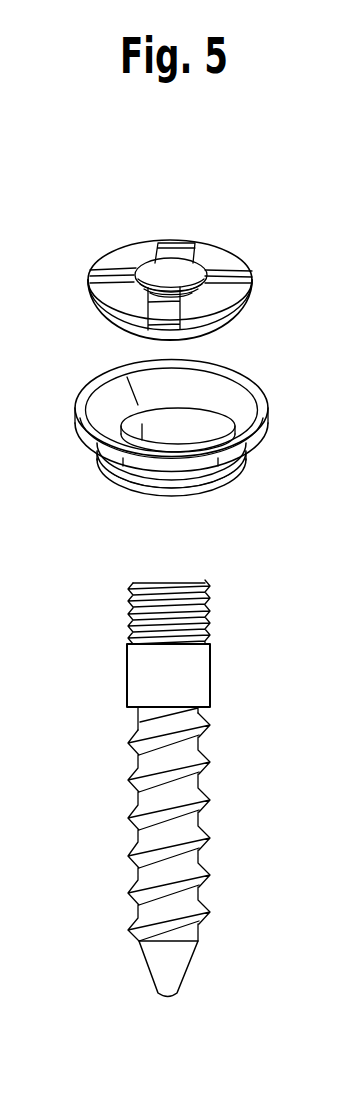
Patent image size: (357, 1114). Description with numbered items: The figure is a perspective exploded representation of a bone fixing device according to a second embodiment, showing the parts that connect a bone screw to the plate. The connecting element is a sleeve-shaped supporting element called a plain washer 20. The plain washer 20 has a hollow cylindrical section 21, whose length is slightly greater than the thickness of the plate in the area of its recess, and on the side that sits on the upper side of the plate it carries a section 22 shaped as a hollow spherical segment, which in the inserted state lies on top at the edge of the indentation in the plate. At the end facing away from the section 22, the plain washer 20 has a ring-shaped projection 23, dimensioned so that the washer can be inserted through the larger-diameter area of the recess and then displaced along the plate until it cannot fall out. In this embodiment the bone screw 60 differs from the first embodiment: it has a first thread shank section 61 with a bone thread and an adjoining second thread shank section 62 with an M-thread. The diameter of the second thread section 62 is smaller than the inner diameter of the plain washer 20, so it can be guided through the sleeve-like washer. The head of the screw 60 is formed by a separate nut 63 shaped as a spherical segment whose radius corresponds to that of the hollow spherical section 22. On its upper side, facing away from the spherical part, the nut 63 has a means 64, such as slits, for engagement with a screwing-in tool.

The plain washer 20 is at (263, 377).
The hollow cylindrical section 21 is at (153, 483).
The section shaped as a hollow spherical segment 22 is at (102, 393).
The ring-shaped projection 23 is at (227, 483).
The bone screw 60 is at (122, 683).
The first thread shank section 61 is at (207, 797).
The second thread shank section 62 is at (207, 607).
The nut 63 is at (218, 257).
The means for bringing into engagement with a screwing-in tool 64 is at (172, 247).